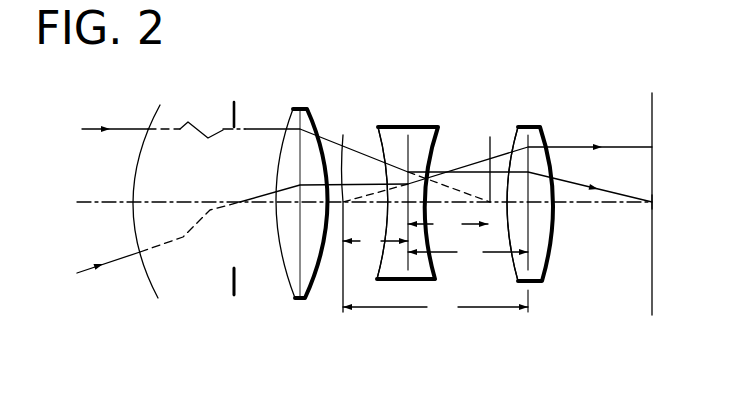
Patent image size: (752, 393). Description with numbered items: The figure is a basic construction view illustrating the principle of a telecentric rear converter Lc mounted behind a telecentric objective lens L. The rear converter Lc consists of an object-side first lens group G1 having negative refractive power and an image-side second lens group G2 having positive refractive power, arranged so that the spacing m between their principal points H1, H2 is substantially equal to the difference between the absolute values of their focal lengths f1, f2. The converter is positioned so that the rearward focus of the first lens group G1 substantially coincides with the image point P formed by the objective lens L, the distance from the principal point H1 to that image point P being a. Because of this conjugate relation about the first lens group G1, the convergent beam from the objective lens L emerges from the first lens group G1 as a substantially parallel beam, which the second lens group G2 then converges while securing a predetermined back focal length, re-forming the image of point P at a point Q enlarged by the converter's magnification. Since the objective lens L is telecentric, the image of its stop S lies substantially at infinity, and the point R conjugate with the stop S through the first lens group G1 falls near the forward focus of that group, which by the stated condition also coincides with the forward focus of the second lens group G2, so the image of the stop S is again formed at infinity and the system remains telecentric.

The telecentric objective lens L is at (135, 86).
The rear converter Lc is at (370, 86).
The first lens group G1 is at (407, 189).
The second lens group G2 is at (530, 191).
The principal point of the first lens group H1 is at (410, 148).
The principal point of the second lens group H2 is at (540, 135).
The image point P is at (495, 166).
The image point of the rear converter Q is at (663, 203).
The conjugate point of the stop R is at (342, 212).
The stop S is at (229, 276).
The distance from principal point H1 to image point P a is at (448, 223).
The focal length of the first lens group f1 is at (375, 241).
The spacing between principal points m is at (468, 251).
The focal length of the second lens group f2 is at (435, 307).